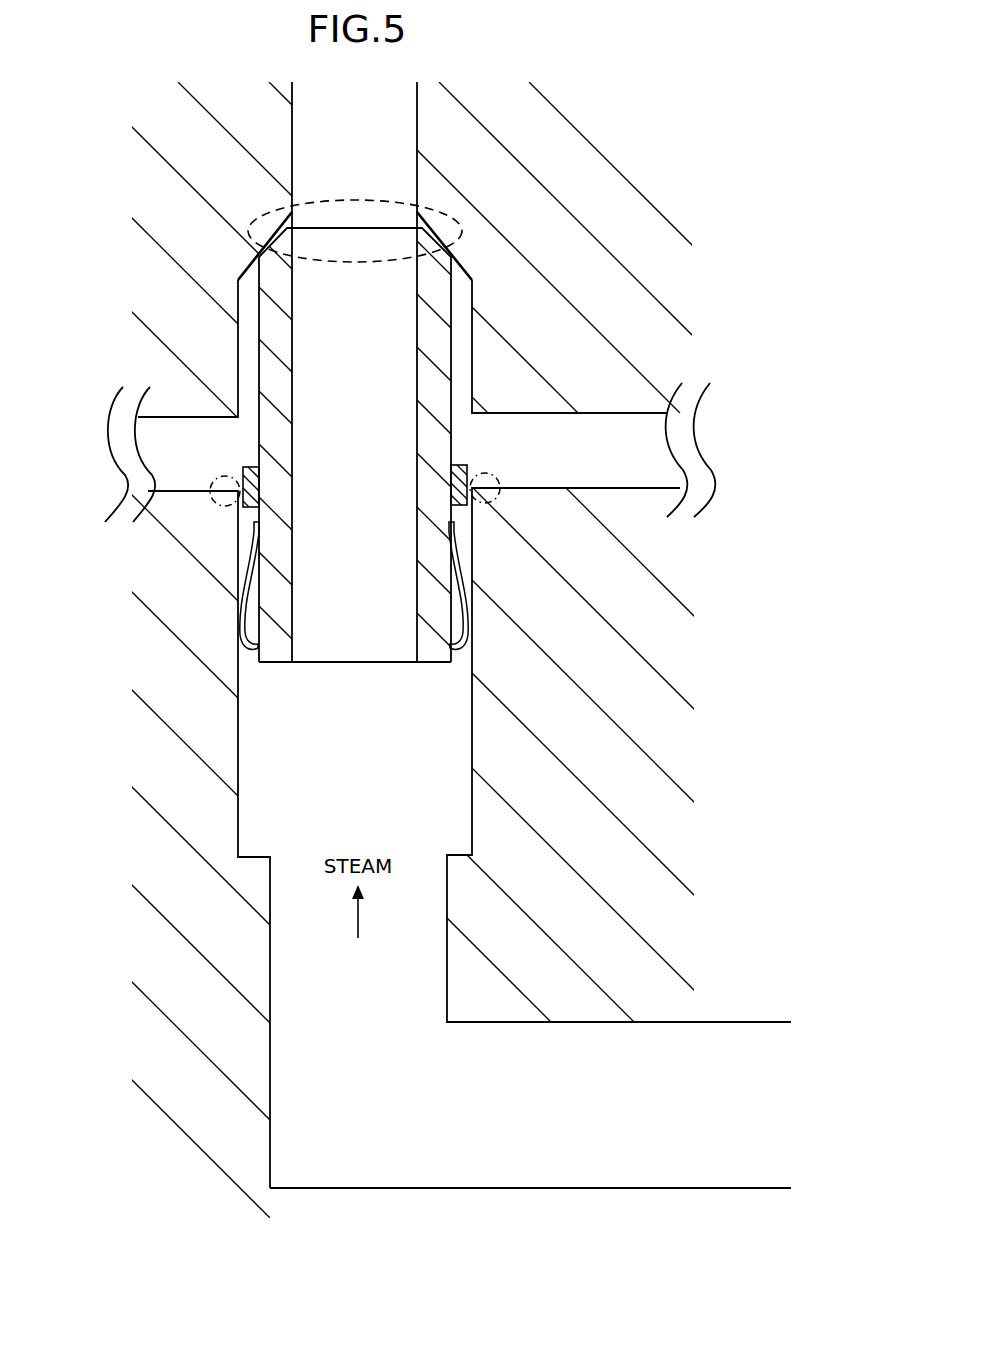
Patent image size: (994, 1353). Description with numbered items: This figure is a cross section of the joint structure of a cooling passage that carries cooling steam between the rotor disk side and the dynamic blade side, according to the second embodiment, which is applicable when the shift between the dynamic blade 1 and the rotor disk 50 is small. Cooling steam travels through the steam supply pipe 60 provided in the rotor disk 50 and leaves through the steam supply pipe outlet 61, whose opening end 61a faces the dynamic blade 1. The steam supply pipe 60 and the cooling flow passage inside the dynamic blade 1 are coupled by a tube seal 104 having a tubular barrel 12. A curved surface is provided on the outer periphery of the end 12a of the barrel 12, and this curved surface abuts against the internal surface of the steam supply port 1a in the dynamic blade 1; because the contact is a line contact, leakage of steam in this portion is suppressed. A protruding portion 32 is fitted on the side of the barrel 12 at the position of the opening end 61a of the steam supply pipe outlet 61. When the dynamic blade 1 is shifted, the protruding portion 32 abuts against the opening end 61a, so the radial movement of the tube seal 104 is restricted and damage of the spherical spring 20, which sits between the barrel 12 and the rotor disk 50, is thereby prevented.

The dynamic blade 1 is at (600, 197).
The steam supply port 1a is at (232, 266).
The barrel 12 is at (432, 330).
The end of the barrel 12a is at (260, 217).
The tube seal 104 is at (240, 455).
The protruding portion 32 is at (468, 467).
The opening end 61a is at (212, 500).
The spherical spring 20 is at (240, 590).
The steam supply pipe outlet 61 is at (226, 727).
The rotor disk 50 is at (610, 752).
The steam supply pipe 60 is at (669, 1172).